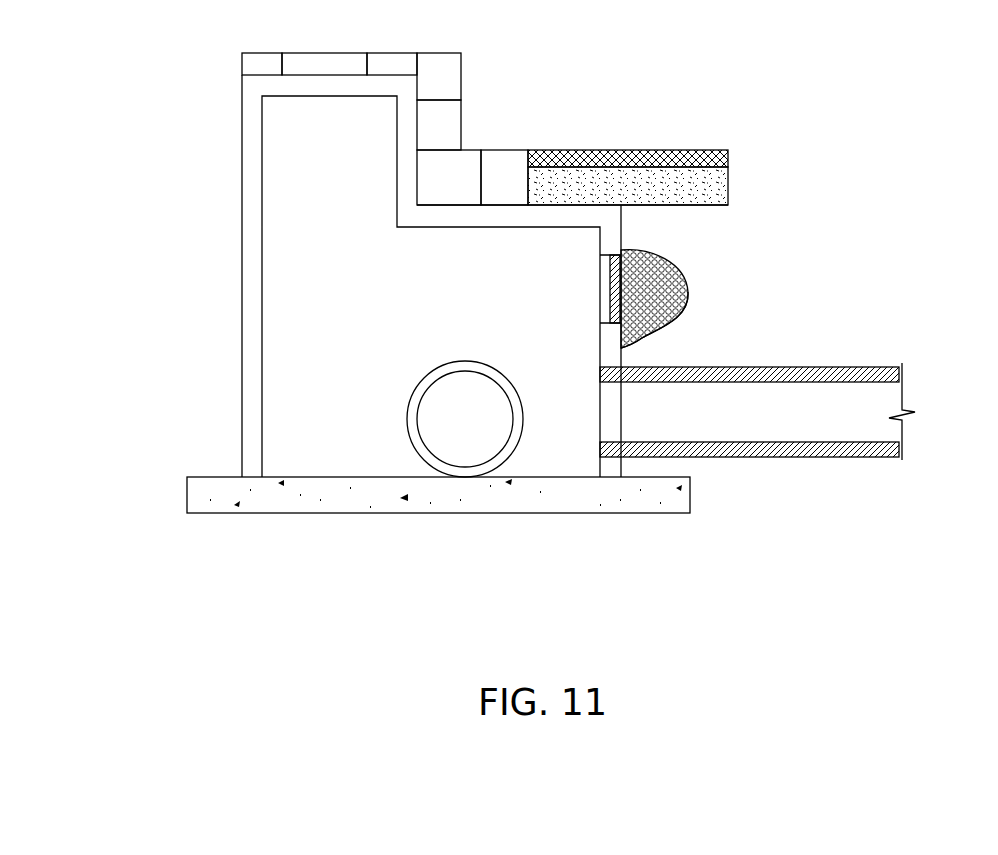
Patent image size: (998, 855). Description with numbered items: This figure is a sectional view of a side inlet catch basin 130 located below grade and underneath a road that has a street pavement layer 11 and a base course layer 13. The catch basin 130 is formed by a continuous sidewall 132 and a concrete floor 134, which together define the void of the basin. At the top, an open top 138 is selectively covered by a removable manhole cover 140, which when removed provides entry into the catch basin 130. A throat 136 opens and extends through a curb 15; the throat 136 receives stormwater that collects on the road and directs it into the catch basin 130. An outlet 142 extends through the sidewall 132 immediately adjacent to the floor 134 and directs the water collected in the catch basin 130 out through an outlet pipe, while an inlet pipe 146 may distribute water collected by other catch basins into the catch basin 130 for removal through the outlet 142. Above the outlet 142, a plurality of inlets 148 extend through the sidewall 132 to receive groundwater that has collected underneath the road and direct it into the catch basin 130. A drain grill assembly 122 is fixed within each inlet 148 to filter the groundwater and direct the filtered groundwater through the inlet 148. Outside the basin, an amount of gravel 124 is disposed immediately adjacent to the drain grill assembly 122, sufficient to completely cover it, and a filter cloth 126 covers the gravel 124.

The street pavement layer 11 is at (612, 152).
The base course layer 13 is at (690, 185).
The curb 15 is at (455, 68).
The drain grill assembly 122 is at (608, 293).
The gravel 124 is at (672, 265).
The filter cloth 126 is at (665, 318).
The side inlet catch basin 130 is at (190, 335).
The continuous sidewall 132 is at (252, 203).
The concrete floor 134 is at (570, 493).
The throat 136 is at (470, 121).
The open top 138 is at (283, 62).
The removable manhole cover 140 is at (342, 60).
The outlet 142 is at (446, 370).
The inlet pipe 146 is at (825, 450).
The inlets 148 is at (586, 272).